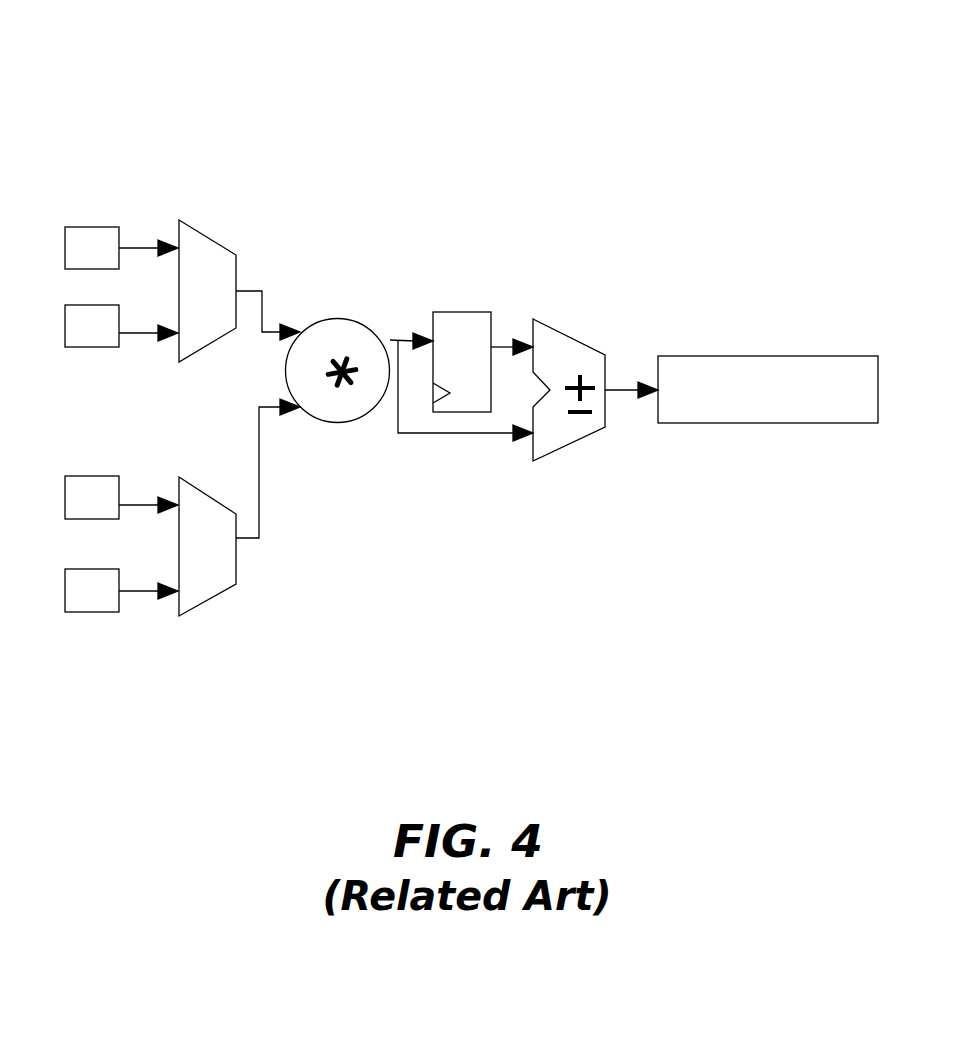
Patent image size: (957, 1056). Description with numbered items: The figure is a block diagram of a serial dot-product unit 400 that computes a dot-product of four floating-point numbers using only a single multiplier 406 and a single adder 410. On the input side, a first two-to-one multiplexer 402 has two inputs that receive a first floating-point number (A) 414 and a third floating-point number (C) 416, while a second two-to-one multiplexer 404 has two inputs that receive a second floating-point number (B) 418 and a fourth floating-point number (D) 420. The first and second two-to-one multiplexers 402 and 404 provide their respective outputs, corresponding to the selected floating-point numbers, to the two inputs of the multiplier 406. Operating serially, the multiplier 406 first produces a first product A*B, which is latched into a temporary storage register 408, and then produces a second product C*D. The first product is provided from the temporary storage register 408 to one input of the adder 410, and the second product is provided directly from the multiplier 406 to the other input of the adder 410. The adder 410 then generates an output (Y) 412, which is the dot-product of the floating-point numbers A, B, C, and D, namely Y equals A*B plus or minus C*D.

The serial dot-product unit 400 is at (120, 32).
The first two-to-one (2:1) multiplexer 402 is at (213, 241).
The second two-to-one (2:1) multiplexer 404 is at (236, 565).
The multiplier 406 is at (338, 318).
The temporary storage register 408 is at (463, 312).
The adder 410 is at (573, 335).
The output (Y) 412 is at (762, 356).
The first floating-point number (A) 414 is at (110, 227).
The third floating-point number (C) 416 is at (110, 347).
The second floating-point number (B) 418 is at (73, 478).
The fourth floating-point number (D) 420 is at (90, 612).